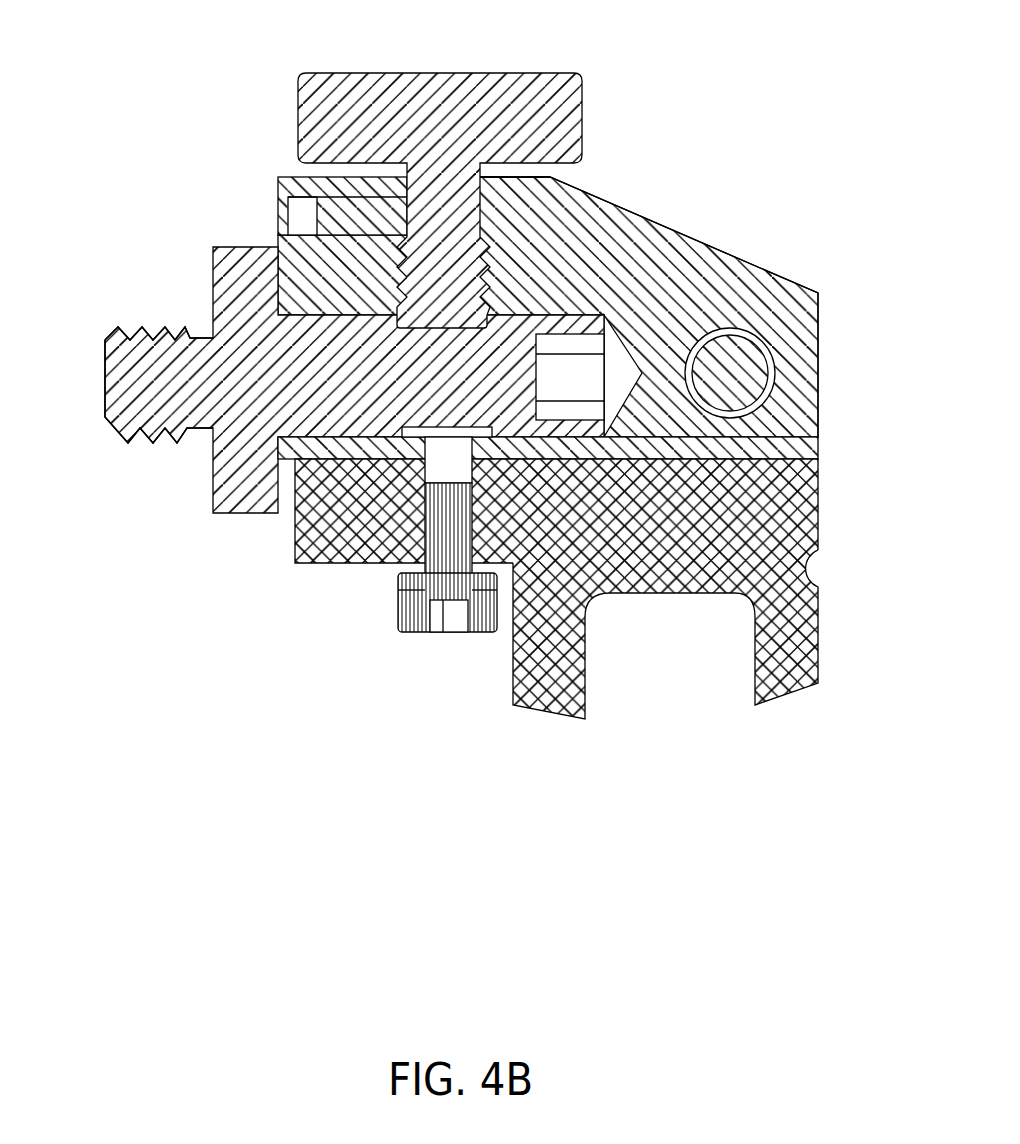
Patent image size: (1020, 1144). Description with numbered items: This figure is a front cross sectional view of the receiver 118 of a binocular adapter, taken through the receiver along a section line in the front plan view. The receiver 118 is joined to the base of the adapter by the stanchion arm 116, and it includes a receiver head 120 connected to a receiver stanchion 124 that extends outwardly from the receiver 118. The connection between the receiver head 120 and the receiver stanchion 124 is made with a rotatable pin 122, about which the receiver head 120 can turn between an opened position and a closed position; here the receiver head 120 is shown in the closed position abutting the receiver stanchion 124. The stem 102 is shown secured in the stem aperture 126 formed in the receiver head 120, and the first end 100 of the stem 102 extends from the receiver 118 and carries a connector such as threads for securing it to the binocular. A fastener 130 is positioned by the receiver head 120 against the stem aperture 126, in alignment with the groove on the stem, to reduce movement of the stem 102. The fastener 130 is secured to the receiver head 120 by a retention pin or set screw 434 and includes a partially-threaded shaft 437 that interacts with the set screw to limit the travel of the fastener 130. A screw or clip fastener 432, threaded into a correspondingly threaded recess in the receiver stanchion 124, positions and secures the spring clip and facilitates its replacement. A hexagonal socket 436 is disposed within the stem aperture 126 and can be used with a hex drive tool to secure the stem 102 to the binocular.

The first end 100 is at (103, 340).
The stem 102 is at (225, 247).
The stanchion arm 116 is at (820, 665).
The receiver 118 is at (465, 362).
The receiver head 120 is at (640, 216).
The rotatable pin 122 is at (742, 330).
The receiver stanchion 124 is at (312, 564).
The stem aperture 126 is at (320, 445).
The fastener 130 is at (545, 73).
The screw or clip fastener 432 is at (405, 630).
The retention pin or set screw 434 is at (278, 203).
The hexagonal socket 436 is at (596, 343).
The partially-threaded shaft 437 is at (562, 185).